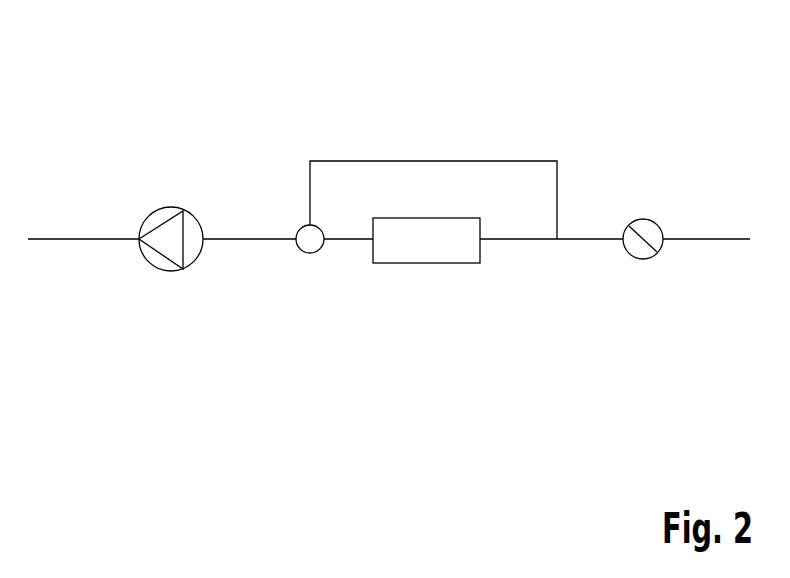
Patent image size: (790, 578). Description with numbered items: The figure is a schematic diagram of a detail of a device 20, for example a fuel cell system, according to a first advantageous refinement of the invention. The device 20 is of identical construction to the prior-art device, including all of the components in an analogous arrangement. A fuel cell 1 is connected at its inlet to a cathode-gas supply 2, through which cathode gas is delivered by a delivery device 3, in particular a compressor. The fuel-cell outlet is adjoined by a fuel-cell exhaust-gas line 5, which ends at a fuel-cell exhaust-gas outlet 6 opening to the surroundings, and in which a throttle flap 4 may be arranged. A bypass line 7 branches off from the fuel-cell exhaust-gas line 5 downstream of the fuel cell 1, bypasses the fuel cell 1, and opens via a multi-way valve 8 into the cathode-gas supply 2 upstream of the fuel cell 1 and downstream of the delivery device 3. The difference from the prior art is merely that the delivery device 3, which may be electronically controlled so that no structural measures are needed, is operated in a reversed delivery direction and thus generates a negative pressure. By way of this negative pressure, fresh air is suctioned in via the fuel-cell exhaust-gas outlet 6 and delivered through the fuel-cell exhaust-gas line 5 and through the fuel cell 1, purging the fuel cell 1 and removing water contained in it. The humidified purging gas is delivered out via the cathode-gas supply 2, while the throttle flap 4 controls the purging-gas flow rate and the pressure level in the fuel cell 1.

The fuel cell 1 is at (415, 263).
The cathode-gas supply 2 is at (357, 243).
The delivery device 3 is at (172, 271).
The throttle flap 4 is at (641, 260).
The fuel-cell exhaust-gas line 5 is at (700, 240).
The fuel-cell exhaust-gas outlet 6 is at (752, 249).
The bypass line 7 is at (437, 161).
The multi-way valve 8 is at (303, 252).
The device 20 is at (662, 67).